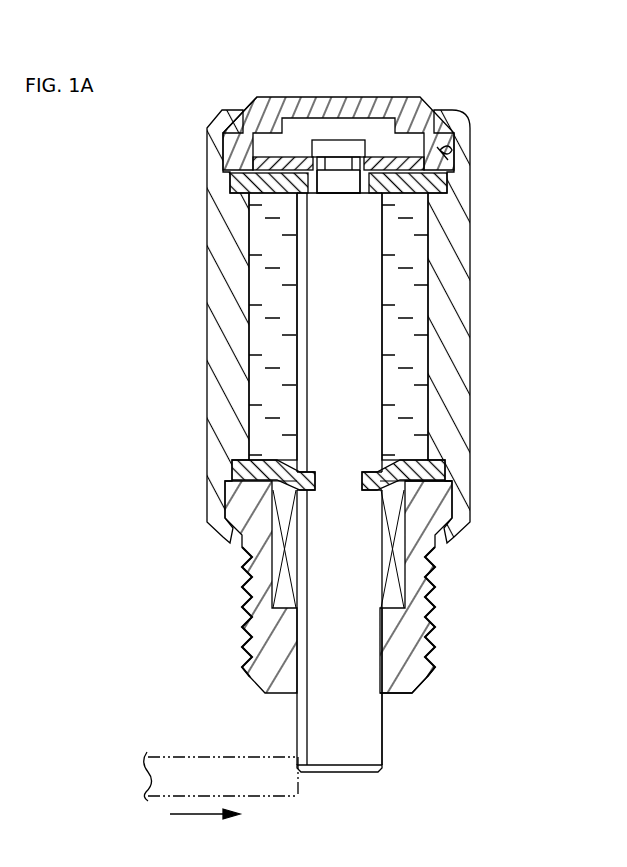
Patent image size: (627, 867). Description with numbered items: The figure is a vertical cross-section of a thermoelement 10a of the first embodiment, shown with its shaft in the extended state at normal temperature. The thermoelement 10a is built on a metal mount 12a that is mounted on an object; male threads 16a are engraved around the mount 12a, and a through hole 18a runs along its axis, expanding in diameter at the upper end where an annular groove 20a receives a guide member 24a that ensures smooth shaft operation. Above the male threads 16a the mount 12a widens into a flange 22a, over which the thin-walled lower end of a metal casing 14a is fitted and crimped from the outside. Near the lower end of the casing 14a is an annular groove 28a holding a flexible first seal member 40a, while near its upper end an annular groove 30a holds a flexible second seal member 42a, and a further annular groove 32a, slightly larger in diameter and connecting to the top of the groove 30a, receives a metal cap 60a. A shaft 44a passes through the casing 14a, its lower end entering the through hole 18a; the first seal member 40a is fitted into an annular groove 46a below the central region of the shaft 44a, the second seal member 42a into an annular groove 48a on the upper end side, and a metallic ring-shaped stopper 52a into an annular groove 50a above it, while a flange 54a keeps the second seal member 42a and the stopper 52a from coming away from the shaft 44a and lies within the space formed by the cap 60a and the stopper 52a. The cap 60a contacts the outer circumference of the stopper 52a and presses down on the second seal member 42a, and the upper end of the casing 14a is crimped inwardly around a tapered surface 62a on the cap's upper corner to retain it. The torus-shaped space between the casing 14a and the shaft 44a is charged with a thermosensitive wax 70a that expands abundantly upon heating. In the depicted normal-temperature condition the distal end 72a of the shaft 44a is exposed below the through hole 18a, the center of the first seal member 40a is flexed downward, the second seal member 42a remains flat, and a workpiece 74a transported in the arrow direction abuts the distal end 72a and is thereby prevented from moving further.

The thermoelement 10a is at (488, 266).
The mount 12a is at (451, 612).
The casing 14a is at (460, 347).
The male threads 16a is at (437, 640).
The through hole 18a is at (382, 682).
The annular groove 20a is at (403, 568).
The flange 22a is at (242, 505).
The guide member 24a is at (275, 567).
The annular groove 28a is at (448, 479).
The annular groove 30a is at (445, 196).
The annular groove 32a is at (450, 143).
The first seal member 40a is at (240, 473).
The second seal member 42a is at (237, 188).
The shaft 44a is at (362, 336).
The annular groove 46a is at (363, 482).
The annular groove 48a is at (357, 179).
The annular groove 50a is at (353, 160).
The stopper 52a is at (400, 157).
The flange 54a is at (327, 142).
The cap 60a is at (275, 103).
The tapered surface 62a is at (247, 117).
The wax 70a is at (260, 283).
The distal end 72a is at (353, 763).
The workpiece 74a is at (228, 753).